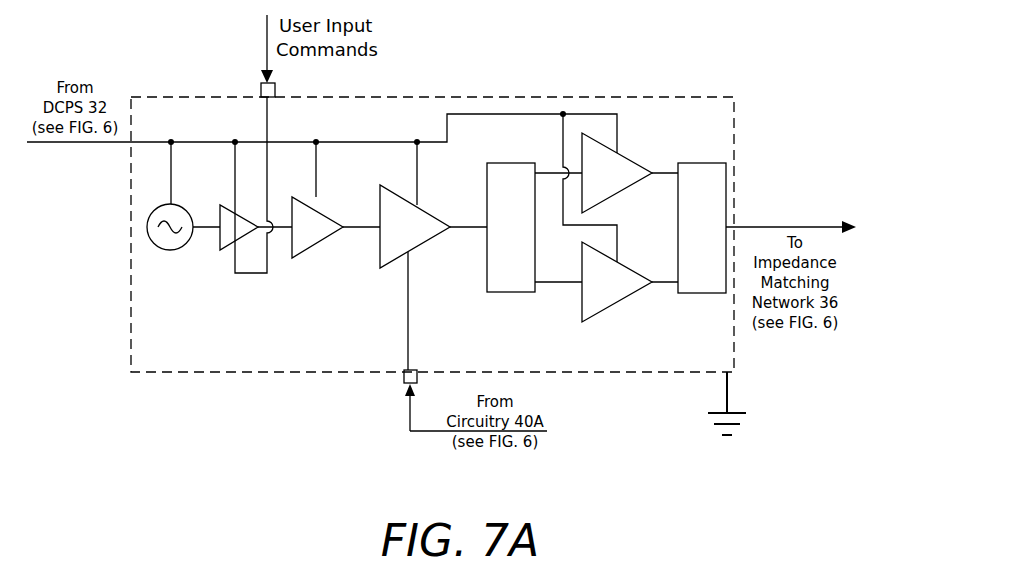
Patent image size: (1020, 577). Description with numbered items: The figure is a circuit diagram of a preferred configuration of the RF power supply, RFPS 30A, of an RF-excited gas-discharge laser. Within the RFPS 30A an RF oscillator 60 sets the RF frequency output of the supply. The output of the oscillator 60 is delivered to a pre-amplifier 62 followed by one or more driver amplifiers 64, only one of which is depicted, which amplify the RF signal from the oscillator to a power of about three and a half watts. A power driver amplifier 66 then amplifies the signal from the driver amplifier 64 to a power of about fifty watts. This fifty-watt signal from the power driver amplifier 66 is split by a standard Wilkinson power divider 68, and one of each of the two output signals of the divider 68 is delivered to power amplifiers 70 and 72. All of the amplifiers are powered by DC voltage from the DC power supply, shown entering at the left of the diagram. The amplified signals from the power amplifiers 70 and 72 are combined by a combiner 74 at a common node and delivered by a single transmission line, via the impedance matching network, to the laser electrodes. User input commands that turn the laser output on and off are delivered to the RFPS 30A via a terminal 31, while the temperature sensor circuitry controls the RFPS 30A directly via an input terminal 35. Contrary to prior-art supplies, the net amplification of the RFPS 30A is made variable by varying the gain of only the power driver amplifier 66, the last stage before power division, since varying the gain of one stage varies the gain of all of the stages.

The RFPS 30A is at (295, 378).
The terminal 31 is at (258, 83).
The input terminal 35 is at (402, 387).
The RF oscillator 60 is at (168, 250).
The pre-amplifier 62 is at (221, 218).
The driver amplifier 64 is at (307, 243).
The power driver amplifier 66 is at (423, 262).
The Wilkinson power divider 68 is at (505, 292).
The power amplifier 70 is at (625, 167).
The power amplifier 72 is at (612, 292).
The combiner 74 is at (703, 282).